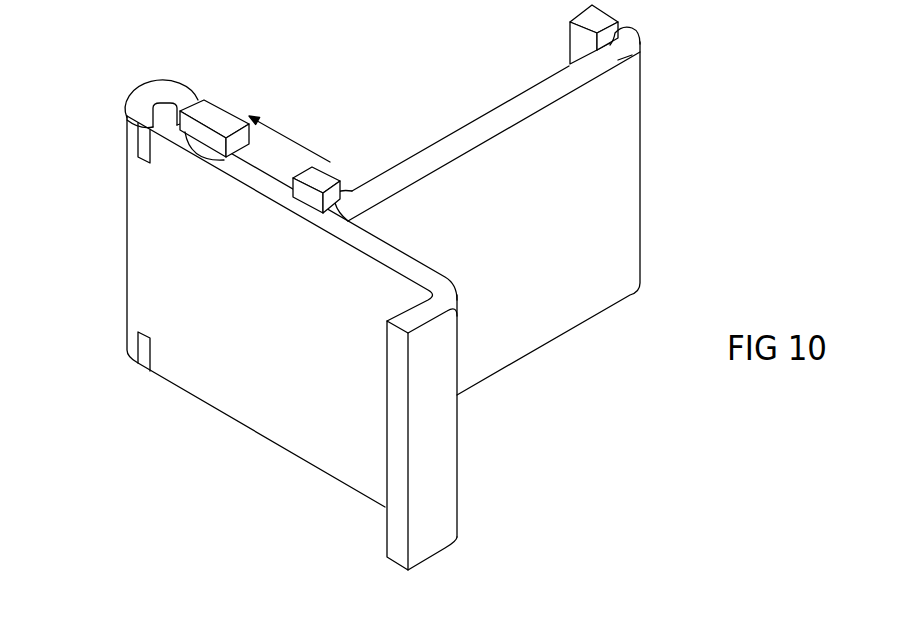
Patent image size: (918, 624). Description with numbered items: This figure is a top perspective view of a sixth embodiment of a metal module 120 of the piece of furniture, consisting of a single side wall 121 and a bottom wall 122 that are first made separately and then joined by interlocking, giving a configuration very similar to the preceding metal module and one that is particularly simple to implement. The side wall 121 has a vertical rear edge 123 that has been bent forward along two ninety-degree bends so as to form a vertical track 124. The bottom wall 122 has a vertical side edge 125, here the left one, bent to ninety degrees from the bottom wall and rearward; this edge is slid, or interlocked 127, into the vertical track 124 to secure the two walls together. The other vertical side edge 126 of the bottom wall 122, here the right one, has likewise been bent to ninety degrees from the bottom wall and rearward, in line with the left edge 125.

The module 120 is at (397, 287).
The side wall 121 is at (178, 273).
The bottom wall 122 is at (563, 202).
The vertical rear edge 123 is at (142, 98).
The vertical track 124 is at (210, 166).
The vertical side edge 125 is at (437, 146).
The other vertical side edge 126 is at (641, 47).
The interlocking 127 is at (283, 132).